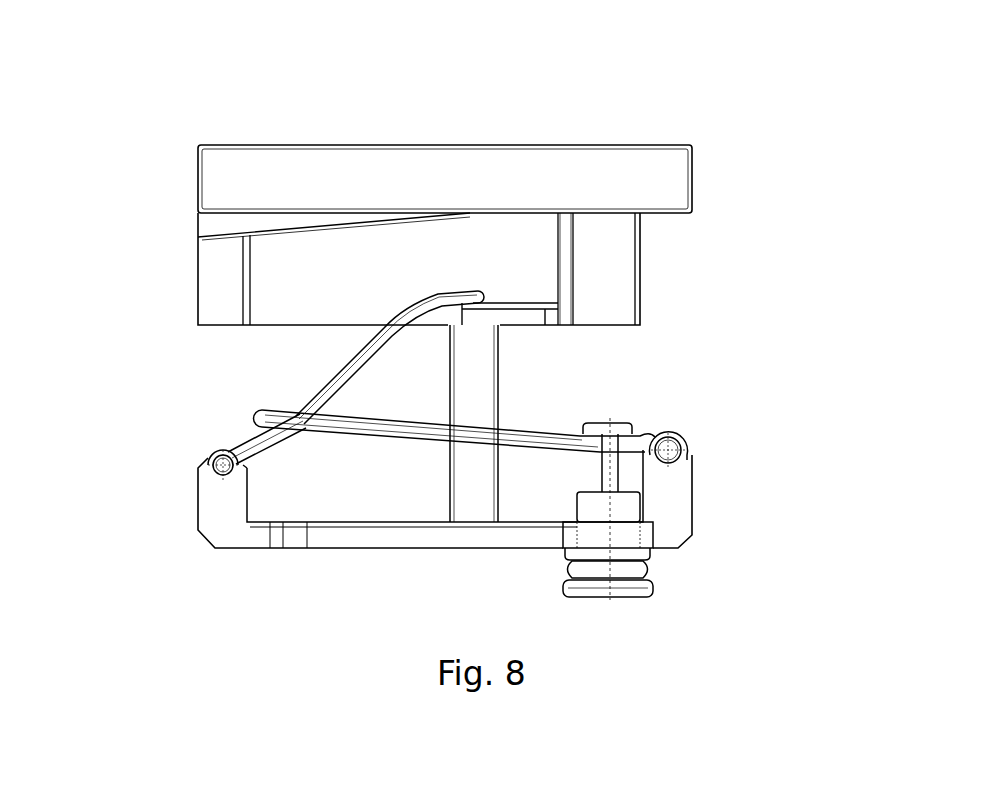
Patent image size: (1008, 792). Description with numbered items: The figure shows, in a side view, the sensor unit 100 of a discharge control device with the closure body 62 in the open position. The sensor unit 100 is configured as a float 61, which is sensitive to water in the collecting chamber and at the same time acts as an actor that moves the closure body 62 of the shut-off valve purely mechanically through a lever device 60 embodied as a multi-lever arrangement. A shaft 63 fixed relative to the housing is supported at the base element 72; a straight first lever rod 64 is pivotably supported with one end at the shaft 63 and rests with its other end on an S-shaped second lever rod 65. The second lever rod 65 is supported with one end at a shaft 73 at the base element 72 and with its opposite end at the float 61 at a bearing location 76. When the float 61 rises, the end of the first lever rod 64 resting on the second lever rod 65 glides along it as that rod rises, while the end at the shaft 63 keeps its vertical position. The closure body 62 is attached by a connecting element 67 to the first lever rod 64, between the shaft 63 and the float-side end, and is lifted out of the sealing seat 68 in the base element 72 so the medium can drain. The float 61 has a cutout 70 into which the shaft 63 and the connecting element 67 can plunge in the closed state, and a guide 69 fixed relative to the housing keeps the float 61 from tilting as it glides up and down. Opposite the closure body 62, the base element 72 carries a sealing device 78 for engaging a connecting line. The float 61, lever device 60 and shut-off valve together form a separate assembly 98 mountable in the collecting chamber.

The separate assembly 98 is at (796, 129).
The sensor unit 100 is at (186, 180).
The float 61 is at (419, 249).
The cutout 70 is at (560, 261).
The bearing location 76 is at (470, 303).
The lever device 60 is at (645, 390).
The second lever rod 65 is at (357, 362).
The first lever rod 64 is at (290, 408).
The shaft 73 is at (215, 472).
The guide 69 is at (450, 477).
The base element 72 is at (413, 545).
The shaft 63 is at (676, 440).
The connecting element 67 is at (603, 473).
The sealing seat 68 is at (632, 536).
The closure body 62 is at (606, 521).
The sealing device 78 is at (642, 587).